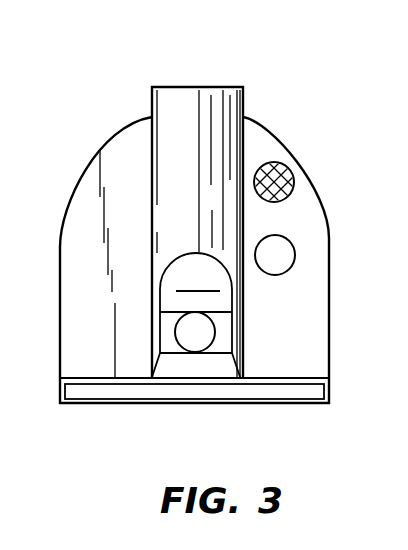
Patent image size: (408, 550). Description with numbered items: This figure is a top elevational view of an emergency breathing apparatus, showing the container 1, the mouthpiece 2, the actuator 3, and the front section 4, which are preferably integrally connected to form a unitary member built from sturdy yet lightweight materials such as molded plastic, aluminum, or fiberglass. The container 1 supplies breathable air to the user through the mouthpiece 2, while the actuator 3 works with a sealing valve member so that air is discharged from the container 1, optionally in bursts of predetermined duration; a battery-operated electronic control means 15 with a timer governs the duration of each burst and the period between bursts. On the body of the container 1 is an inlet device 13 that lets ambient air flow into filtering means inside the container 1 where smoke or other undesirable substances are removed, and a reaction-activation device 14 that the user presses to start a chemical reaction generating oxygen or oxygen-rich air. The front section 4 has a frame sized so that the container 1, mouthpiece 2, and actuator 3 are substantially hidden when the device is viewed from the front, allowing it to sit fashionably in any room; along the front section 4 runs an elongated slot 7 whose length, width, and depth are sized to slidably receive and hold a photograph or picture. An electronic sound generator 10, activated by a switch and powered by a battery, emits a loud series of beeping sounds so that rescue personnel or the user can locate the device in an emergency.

The container 1 is at (306, 297).
The mouthpiece 2 is at (179, 89).
The actuator 3 is at (219, 334).
The front section 4 is at (347, 413).
The elongated slot 7 is at (112, 392).
The electronic sound generator 10 is at (398, 58).
The inlet device 13 is at (289, 167).
The reaction-activation device 14 is at (294, 250).
The electronic control means 15 is at (215, 373).